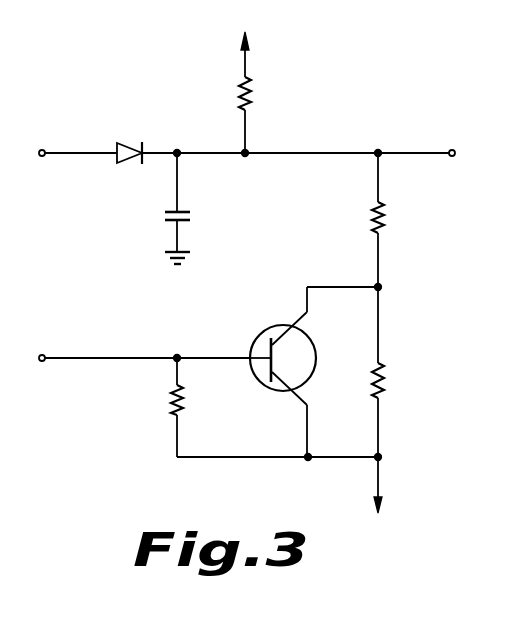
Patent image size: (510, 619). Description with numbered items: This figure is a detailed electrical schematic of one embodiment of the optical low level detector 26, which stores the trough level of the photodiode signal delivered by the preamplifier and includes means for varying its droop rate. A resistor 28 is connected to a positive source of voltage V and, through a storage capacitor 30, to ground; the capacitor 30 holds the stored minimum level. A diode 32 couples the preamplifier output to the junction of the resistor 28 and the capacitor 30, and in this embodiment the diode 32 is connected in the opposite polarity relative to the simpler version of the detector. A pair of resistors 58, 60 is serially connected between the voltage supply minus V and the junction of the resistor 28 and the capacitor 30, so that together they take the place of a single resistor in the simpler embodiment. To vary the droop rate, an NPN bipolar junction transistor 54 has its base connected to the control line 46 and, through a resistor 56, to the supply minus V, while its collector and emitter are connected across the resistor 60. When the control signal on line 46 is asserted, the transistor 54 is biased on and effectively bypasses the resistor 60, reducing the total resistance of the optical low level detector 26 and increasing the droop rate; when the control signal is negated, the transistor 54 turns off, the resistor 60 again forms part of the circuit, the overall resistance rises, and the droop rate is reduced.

The optical low level detector 26 is at (374, 118).
The resistor 28 is at (256, 98).
The storage capacitor 30 is at (165, 217).
The diode 32 is at (128, 143).
The control line 46 is at (43, 362).
The NPN bipolar junction transistor 54 is at (277, 322).
The resistor 56 is at (172, 411).
The resistor 58 is at (390, 229).
The resistor 60 is at (392, 389).